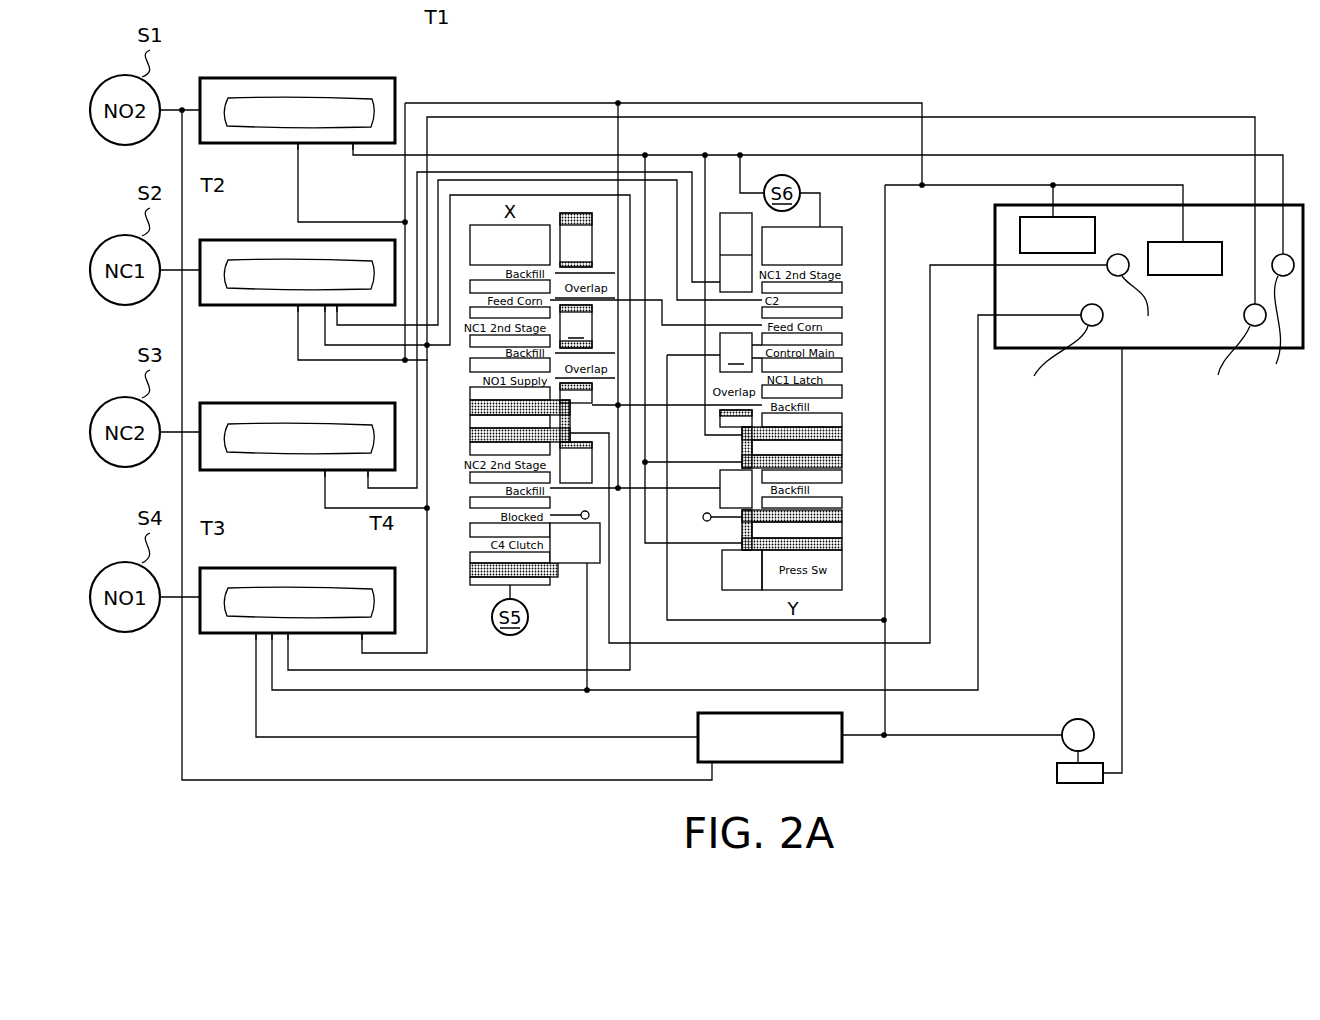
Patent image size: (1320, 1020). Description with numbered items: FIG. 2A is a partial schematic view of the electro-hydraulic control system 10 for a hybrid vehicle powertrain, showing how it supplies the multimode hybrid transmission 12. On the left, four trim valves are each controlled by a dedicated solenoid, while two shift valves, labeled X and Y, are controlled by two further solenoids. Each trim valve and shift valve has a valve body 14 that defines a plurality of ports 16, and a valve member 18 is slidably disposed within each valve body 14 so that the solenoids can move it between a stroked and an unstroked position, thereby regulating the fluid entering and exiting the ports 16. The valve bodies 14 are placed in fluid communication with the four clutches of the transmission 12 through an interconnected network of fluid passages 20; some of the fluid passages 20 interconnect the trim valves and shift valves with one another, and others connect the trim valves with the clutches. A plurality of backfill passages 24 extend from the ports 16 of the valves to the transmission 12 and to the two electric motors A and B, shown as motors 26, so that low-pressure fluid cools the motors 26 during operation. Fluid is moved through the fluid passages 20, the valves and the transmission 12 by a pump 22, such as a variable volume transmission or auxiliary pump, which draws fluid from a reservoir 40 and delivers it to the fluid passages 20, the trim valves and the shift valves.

The electro-hydraulic control system 10 is at (180, 780).
The multimode hybrid transmission 12 is at (1168, 350).
The valve body 14 is at (293, 344).
The ports 16 is at (348, 146).
The valve member 18 is at (266, 98).
The fluid passages 20 is at (356, 158).
The pump 22 is at (1076, 722).
The backfill passages 24 is at (622, 128).
The electric motors 26 is at (1018, 241).
The reservoir 40 is at (1056, 774).